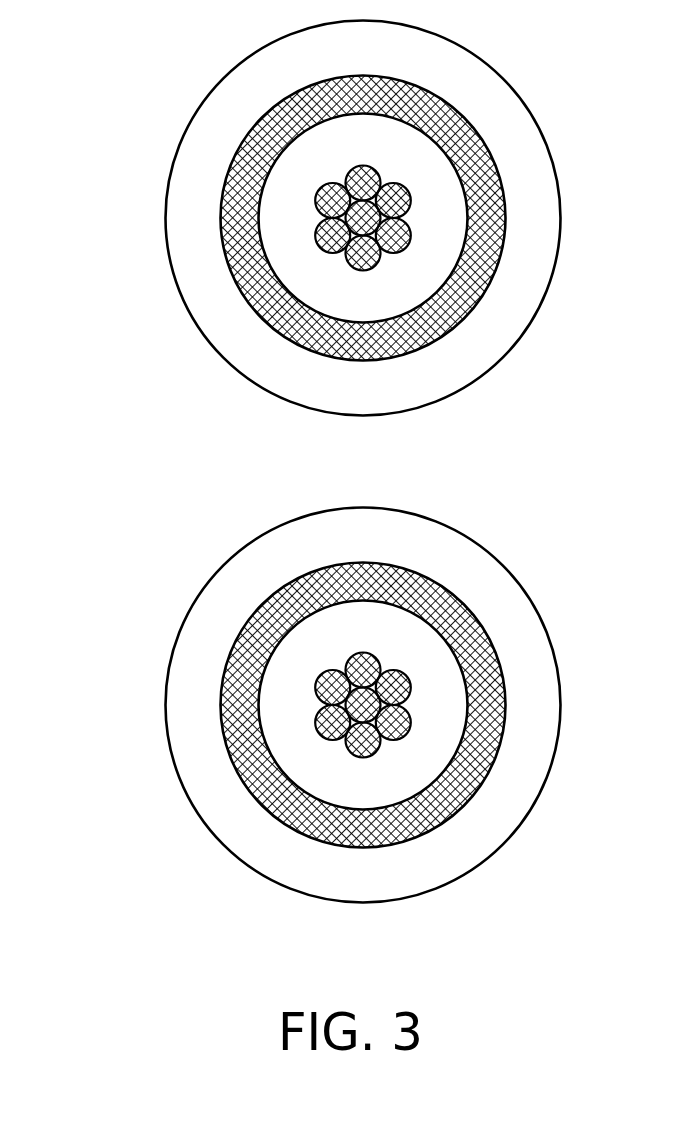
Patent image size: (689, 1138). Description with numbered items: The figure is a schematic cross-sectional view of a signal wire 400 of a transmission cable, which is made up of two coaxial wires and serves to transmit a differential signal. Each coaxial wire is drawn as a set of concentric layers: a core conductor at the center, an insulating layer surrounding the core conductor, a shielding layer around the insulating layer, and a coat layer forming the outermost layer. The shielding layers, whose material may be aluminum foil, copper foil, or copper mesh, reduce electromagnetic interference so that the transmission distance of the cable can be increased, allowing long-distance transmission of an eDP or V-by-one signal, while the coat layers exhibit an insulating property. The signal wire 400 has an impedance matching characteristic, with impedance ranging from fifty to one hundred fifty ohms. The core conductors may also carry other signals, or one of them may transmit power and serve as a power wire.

The signal wire 400 is at (310, 482).